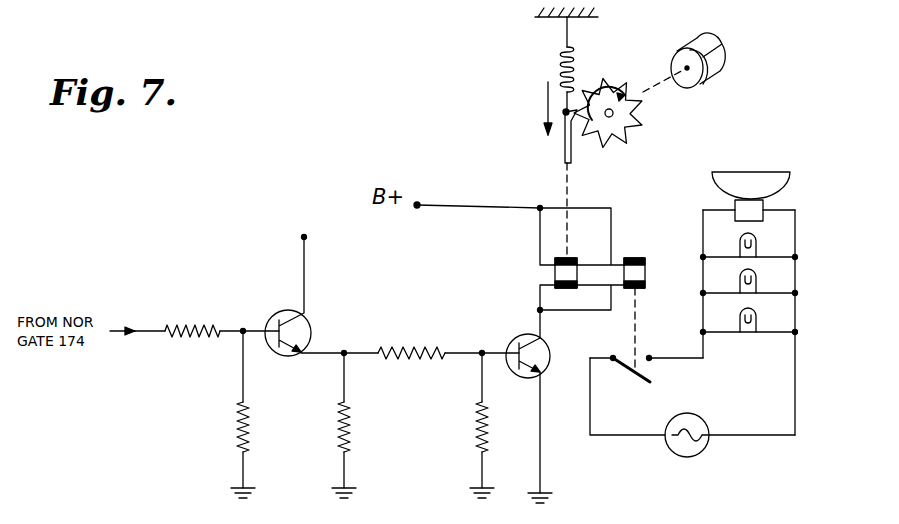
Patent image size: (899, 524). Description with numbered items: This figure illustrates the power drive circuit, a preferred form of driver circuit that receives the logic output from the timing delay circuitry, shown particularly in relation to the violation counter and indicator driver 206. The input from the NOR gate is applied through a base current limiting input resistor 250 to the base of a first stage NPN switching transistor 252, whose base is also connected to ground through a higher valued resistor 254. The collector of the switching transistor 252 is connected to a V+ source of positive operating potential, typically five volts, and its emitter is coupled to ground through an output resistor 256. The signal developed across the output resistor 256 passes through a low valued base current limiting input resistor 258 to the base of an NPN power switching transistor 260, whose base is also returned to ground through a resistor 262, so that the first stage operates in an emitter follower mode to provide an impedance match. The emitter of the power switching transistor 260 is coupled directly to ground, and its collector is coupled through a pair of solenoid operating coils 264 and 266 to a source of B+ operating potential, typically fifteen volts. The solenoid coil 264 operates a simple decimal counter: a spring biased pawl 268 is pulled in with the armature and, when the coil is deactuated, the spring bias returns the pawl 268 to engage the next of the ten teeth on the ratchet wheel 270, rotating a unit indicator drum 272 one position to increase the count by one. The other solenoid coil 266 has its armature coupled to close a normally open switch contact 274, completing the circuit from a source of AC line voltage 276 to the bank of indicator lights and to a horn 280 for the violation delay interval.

The violation counter and indicator driver 206 is at (433, 313).
The base current limiting input resistor 250 is at (189, 325).
The first stage NPN switching transistor 252 is at (290, 311).
The higher valued resistor 254 is at (248, 446).
The output resistor 256 is at (351, 432).
The low valued base current limiting input resistor 258 is at (438, 353).
The NPN power switching transistor 260 is at (552, 359).
The resistor 262 is at (474, 447).
The solenoid operating coil 264 is at (578, 272).
The solenoid operating coil 266 is at (646, 272).
The spring biased pawl 268 is at (565, 152).
The ratchet wheel 270 is at (640, 122).
The unit indicator drum 272 is at (727, 50).
The normally open switch contact 274 is at (633, 377).
The source of AC line voltage 276 is at (704, 452).
The horn 280 is at (788, 176).